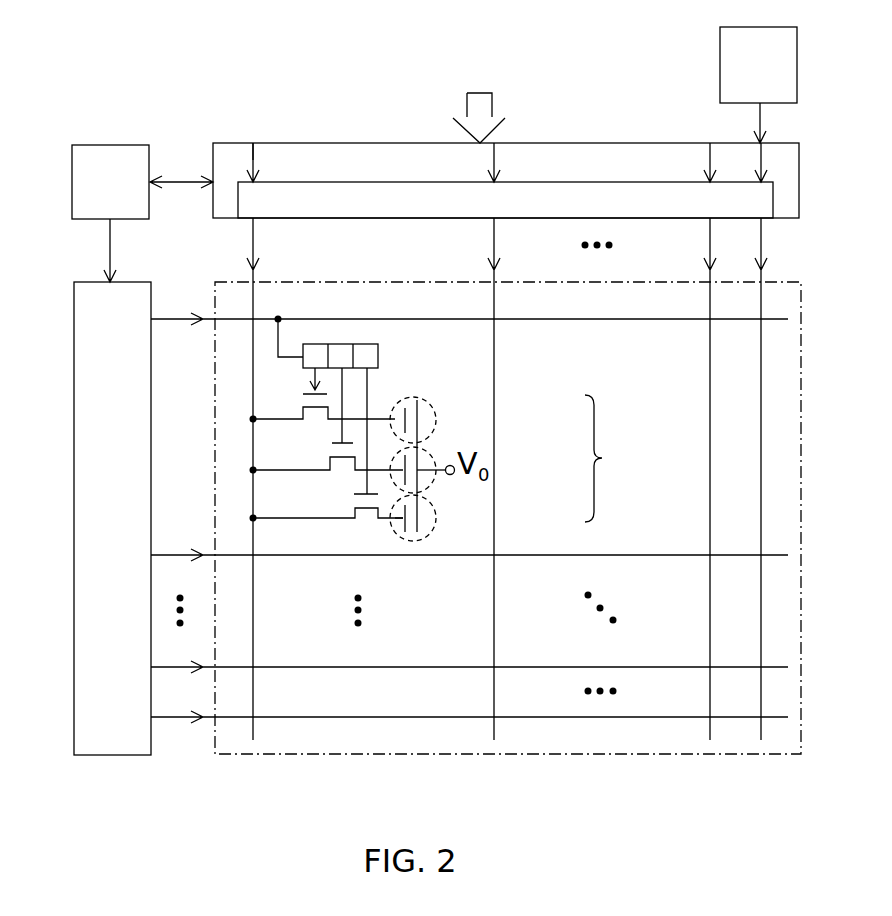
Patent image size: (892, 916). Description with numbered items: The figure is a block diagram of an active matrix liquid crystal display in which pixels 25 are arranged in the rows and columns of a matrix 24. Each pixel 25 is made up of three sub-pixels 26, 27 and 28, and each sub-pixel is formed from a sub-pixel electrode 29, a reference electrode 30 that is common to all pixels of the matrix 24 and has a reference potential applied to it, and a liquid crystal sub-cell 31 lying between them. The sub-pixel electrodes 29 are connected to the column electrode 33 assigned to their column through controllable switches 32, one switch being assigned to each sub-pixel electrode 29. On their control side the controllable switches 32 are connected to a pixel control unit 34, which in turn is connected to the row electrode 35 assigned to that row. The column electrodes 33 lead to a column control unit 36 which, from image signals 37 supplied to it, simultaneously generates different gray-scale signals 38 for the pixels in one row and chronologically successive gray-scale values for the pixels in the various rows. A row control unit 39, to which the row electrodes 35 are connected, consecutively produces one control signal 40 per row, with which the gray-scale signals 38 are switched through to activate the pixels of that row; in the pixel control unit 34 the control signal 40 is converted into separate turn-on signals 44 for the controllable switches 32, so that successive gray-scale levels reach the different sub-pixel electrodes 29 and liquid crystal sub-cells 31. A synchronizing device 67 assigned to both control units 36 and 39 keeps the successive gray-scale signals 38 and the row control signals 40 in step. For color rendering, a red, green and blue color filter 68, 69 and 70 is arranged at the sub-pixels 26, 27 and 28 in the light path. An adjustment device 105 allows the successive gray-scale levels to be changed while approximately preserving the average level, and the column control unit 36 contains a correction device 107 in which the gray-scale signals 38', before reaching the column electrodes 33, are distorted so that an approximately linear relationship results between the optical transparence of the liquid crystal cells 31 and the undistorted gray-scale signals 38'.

The matrix 24 is at (801, 472).
The pixel 25 is at (617, 458).
The sub-pixel 26 is at (514, 423).
The sub-pixel 27 is at (514, 475).
The sub-pixel 28 is at (514, 525).
The sub-pixel electrode 29 is at (405, 410).
The reference electrode 30 is at (428, 407).
The liquid crystal sub-cell 31 is at (411, 406).
The controllable switch 32 is at (333, 451).
The column electrode 33 is at (255, 728).
The pixel control unit 34 is at (363, 344).
The row electrode 35 is at (768, 320).
The column control unit 36 is at (328, 146).
The image signal 37 is at (466, 104).
The gray-scale signal 38 is at (507, 441).
The gray-scale signal 38' is at (288, 163).
The row control unit 39 is at (78, 562).
The control signal 40 is at (183, 297).
The turn-on signal 44 is at (313, 381).
The synchronizing device 67 is at (107, 147).
The red color filter 68 is at (428, 432).
The green color filter 69 is at (430, 485).
The blue color filter 70 is at (397, 535).
The adjustment device 105 is at (722, 53).
The correction device 107 is at (592, 182).